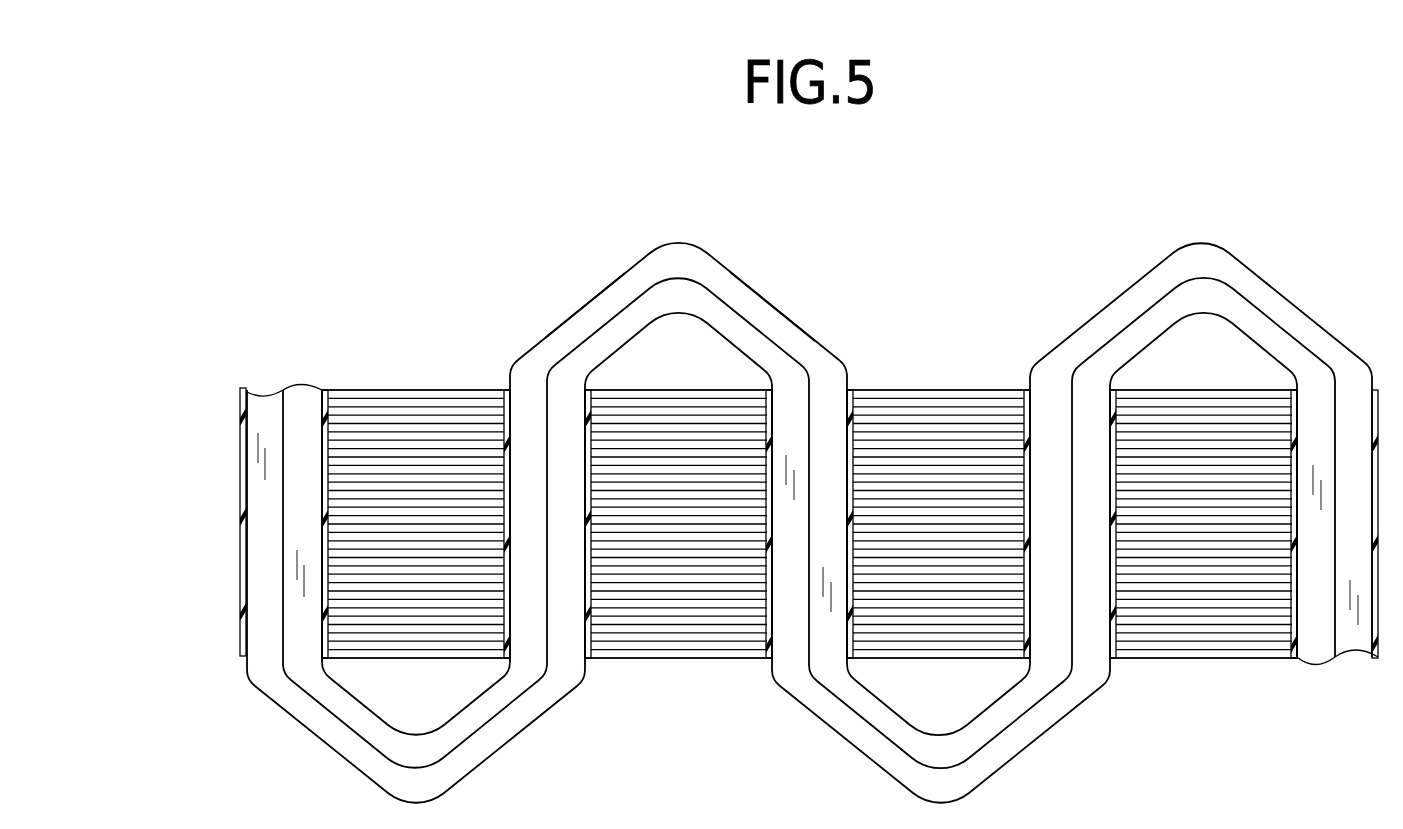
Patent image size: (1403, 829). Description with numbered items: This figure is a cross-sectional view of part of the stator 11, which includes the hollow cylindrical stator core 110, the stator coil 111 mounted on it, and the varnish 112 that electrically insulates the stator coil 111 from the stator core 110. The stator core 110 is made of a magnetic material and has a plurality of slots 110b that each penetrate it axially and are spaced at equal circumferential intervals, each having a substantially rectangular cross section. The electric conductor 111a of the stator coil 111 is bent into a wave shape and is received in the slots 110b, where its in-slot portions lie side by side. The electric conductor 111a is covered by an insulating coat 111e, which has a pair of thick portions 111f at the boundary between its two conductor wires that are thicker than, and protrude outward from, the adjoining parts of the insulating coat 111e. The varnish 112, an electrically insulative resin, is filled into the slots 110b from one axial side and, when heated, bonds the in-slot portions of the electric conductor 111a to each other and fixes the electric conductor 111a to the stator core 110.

The stator 11 is at (975, 197).
The stator core 110 is at (672, 660).
The slots 110b is at (245, 625).
The stator coil 111 is at (812, 480).
The electric conductor 111a is at (677, 242).
The insulating coat 111e is at (757, 307).
The thick portions 111f is at (603, 327).
The varnish 112 is at (497, 423).